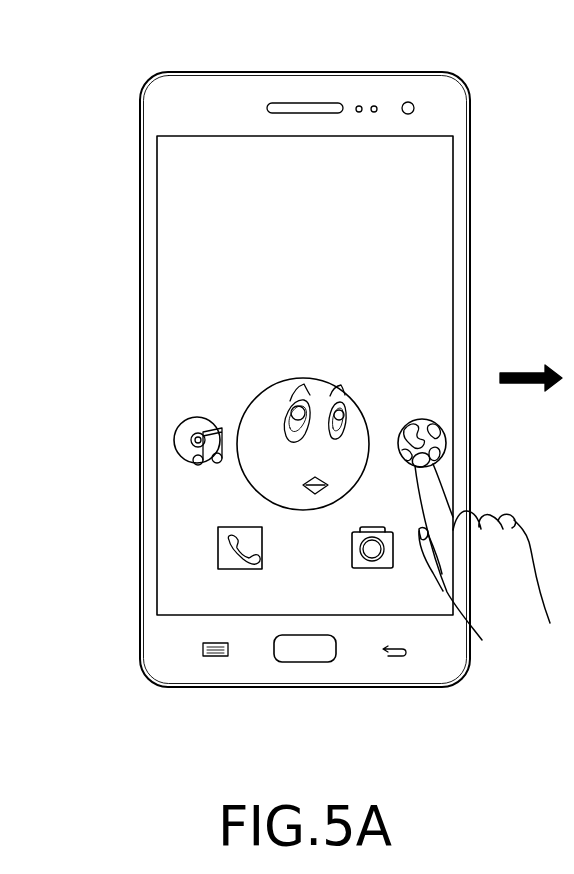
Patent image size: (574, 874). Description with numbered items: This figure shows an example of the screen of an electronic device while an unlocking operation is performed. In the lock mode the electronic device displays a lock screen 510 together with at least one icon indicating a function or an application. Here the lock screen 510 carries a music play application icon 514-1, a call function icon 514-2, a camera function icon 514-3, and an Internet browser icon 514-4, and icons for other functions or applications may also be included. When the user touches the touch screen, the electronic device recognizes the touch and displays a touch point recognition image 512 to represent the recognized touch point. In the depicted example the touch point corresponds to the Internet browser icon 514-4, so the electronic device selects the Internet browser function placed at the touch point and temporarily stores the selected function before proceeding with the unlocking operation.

The lock screen 510 is at (235, 136).
The touch point recognition image 512 is at (304, 377).
The music play application icon 514-1 is at (174, 438).
The call function icon 514-2 is at (217, 548).
The camera function icon 514-3 is at (375, 570).
The Internet browser icon 514-4 is at (446, 425).